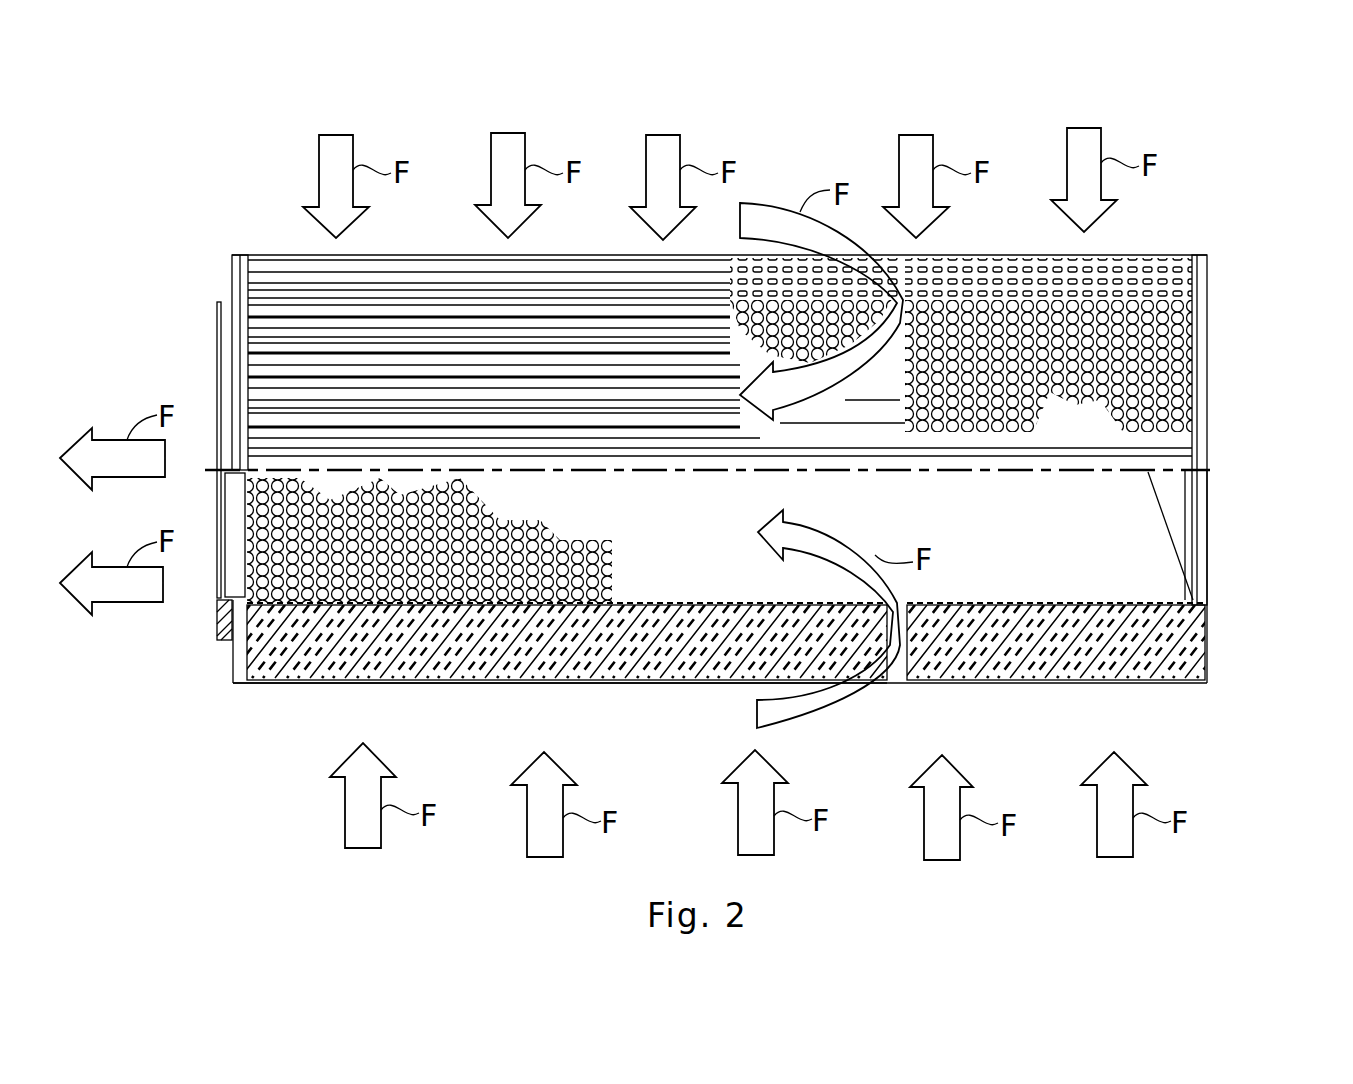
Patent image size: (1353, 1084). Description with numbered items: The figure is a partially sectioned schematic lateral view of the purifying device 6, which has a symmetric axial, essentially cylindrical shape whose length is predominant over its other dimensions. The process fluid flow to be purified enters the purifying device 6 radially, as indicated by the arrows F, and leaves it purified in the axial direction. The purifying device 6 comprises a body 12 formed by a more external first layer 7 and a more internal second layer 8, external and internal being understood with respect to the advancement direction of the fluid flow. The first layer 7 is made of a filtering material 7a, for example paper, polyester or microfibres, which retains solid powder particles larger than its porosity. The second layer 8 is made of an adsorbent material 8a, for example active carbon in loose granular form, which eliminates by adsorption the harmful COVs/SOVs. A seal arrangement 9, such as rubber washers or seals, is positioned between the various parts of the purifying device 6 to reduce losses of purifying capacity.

The purifying device 6 is at (178, 118).
The first layer 7 is at (448, 700).
The filtering material 7a is at (293, 668).
The second layer 8 is at (1112, 583).
The adsorbent material 8a is at (528, 528).
The seal arrangement 9 is at (217, 344).
The body 12 is at (1256, 298).